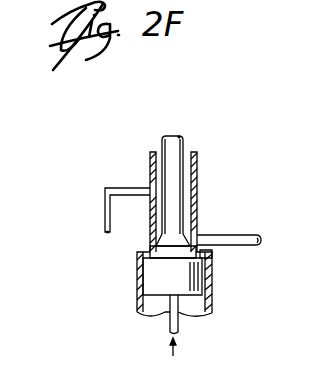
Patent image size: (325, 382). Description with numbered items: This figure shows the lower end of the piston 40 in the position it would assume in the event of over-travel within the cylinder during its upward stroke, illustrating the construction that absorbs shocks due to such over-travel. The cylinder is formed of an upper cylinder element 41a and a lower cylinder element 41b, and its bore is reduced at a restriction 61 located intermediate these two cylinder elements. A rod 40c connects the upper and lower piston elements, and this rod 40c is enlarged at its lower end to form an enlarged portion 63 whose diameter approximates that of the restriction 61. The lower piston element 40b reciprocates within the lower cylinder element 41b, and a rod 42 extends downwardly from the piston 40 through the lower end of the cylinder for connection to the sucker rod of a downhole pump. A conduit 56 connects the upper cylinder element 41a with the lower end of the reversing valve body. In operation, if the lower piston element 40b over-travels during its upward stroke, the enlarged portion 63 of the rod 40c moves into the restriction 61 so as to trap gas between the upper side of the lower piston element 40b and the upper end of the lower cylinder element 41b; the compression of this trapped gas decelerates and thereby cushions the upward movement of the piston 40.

The piston 40 is at (186, 203).
The lower piston element 40b is at (157, 277).
The rod 40c is at (197, 180).
The upper cylinder element 41a is at (197, 221).
The lower cylinder element 41b is at (212, 302).
The rod 42 is at (168, 330).
The conduit 56 is at (102, 210).
The restriction 61 is at (150, 234).
The enlarged portion 63 is at (212, 254).